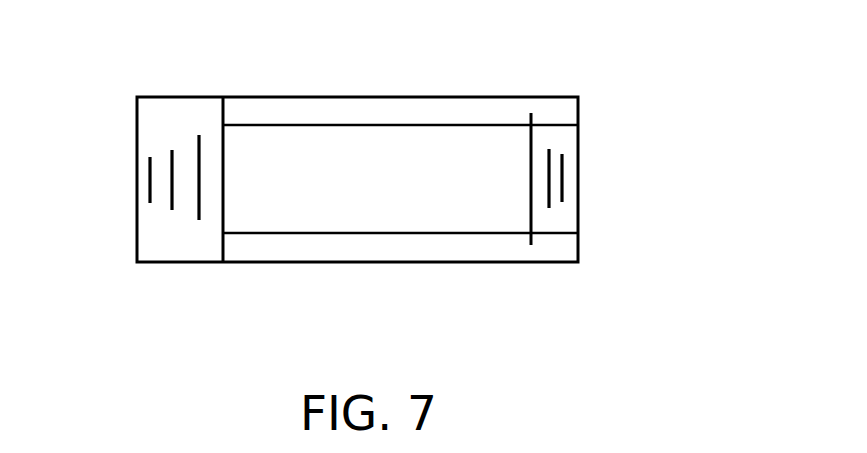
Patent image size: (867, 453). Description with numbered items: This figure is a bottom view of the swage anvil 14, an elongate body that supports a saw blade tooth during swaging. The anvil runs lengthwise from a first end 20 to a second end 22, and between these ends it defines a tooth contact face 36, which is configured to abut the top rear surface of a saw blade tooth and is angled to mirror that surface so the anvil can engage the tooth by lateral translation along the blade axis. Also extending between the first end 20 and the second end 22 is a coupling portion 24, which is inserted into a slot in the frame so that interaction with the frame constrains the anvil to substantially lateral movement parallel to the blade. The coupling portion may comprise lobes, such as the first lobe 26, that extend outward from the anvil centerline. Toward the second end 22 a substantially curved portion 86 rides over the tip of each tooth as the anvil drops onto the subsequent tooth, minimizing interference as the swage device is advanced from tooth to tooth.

The swage anvil 14 is at (588, 67).
The first end 20 is at (130, 267).
The second end 22 is at (587, 278).
The coupling portion 24 is at (292, 98).
The first lobe 26 is at (253, 262).
The tooth contact face 36 is at (367, 173).
The curved portion 86 is at (586, 169).